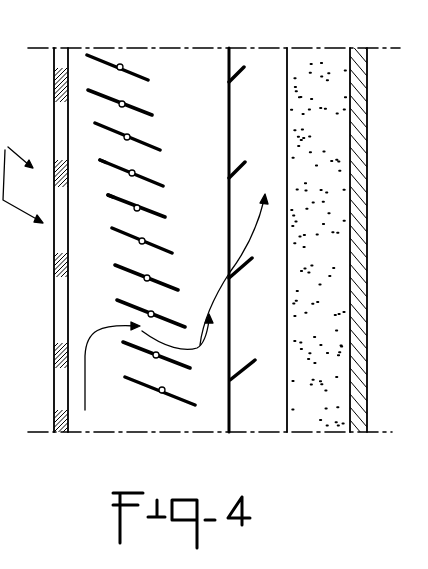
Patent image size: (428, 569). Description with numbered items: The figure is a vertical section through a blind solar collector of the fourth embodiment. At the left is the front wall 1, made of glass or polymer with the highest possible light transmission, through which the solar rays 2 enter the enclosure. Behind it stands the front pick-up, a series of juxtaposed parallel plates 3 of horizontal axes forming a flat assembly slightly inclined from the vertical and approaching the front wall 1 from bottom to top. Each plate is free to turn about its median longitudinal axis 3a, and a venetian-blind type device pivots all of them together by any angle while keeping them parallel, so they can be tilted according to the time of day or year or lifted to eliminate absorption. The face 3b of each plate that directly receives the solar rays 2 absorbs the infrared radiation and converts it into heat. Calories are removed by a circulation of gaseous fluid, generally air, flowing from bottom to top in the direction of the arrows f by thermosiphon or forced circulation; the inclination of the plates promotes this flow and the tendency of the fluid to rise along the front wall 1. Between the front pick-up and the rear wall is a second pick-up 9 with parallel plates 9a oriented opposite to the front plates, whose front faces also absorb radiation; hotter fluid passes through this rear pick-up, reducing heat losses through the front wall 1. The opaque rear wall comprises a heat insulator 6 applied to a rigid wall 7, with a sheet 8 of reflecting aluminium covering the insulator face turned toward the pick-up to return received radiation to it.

The front wall 1 is at (54, 307).
The solar rays 2 is at (23, 169).
The plates 3 is at (163, 186).
The median longitudinal axis 3a is at (150, 277).
The absorbent face 3b is at (114, 197).
The heat insulator 6 is at (320, 257).
The rigid wall 7 is at (362, 317).
The sheet of reflecting aluminium 8 is at (288, 223).
The second pick-up 9 is at (230, 105).
The plates of the second pick-up 9a is at (247, 362).
The arrows of fluid circulation f is at (200, 349).